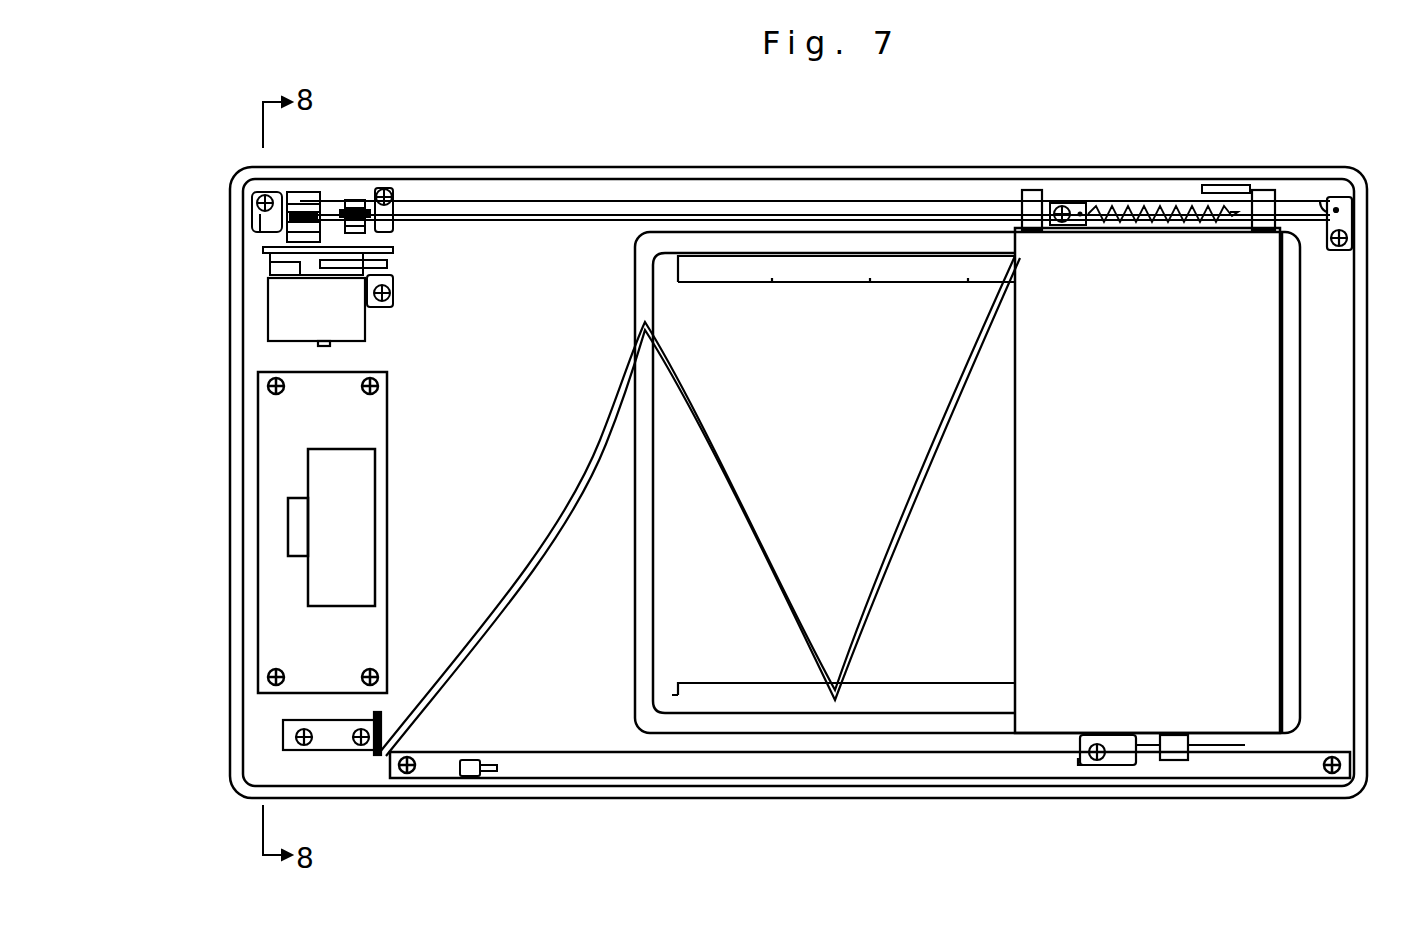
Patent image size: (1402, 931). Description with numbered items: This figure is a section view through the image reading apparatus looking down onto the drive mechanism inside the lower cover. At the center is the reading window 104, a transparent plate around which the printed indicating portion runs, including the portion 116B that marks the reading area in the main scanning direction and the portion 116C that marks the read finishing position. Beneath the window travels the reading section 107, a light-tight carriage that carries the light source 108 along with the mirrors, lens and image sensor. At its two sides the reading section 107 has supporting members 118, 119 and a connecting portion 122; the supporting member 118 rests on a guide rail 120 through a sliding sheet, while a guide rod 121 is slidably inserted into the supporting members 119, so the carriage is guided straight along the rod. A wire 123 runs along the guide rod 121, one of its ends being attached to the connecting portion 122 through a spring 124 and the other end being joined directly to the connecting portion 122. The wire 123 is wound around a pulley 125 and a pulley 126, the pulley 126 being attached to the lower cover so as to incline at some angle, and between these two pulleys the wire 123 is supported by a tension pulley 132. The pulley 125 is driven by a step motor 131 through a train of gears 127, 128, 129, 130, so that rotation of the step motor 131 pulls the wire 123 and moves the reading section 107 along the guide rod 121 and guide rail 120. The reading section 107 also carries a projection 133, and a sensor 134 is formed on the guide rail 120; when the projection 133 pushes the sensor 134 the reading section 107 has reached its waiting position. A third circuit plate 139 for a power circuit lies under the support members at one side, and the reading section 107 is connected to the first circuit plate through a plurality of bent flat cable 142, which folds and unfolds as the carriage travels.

The reading window 104 is at (668, 610).
The reading section 107 is at (1030, 535).
The light source 108 is at (1222, 190).
The portion for indicating a reading area in the main scanning direction 116B is at (846, 284).
The portion for indicating a read finishing position 116C is at (678, 270).
The supporting member 118 is at (1178, 760).
The supporting members 119 is at (1028, 190).
The guide rail 120 is at (940, 765).
The guide rod 121 is at (836, 213).
The connecting portion 122 is at (1068, 203).
The wire 123 is at (742, 205).
The spring 124 is at (1142, 203).
The pulley 125 is at (332, 194).
The pulley 126 is at (1334, 195).
The gear 127 is at (262, 234).
The gear 128 is at (378, 236).
The gear 129 is at (385, 264).
The gear 130 is at (302, 282).
The step motor 131 is at (346, 320).
The tension pulley 132 is at (358, 210).
The projection 133 is at (1122, 752).
The sensor 134 is at (470, 778).
The third circuit plate 139 is at (275, 470).
The bent flat cable 142 is at (742, 488).